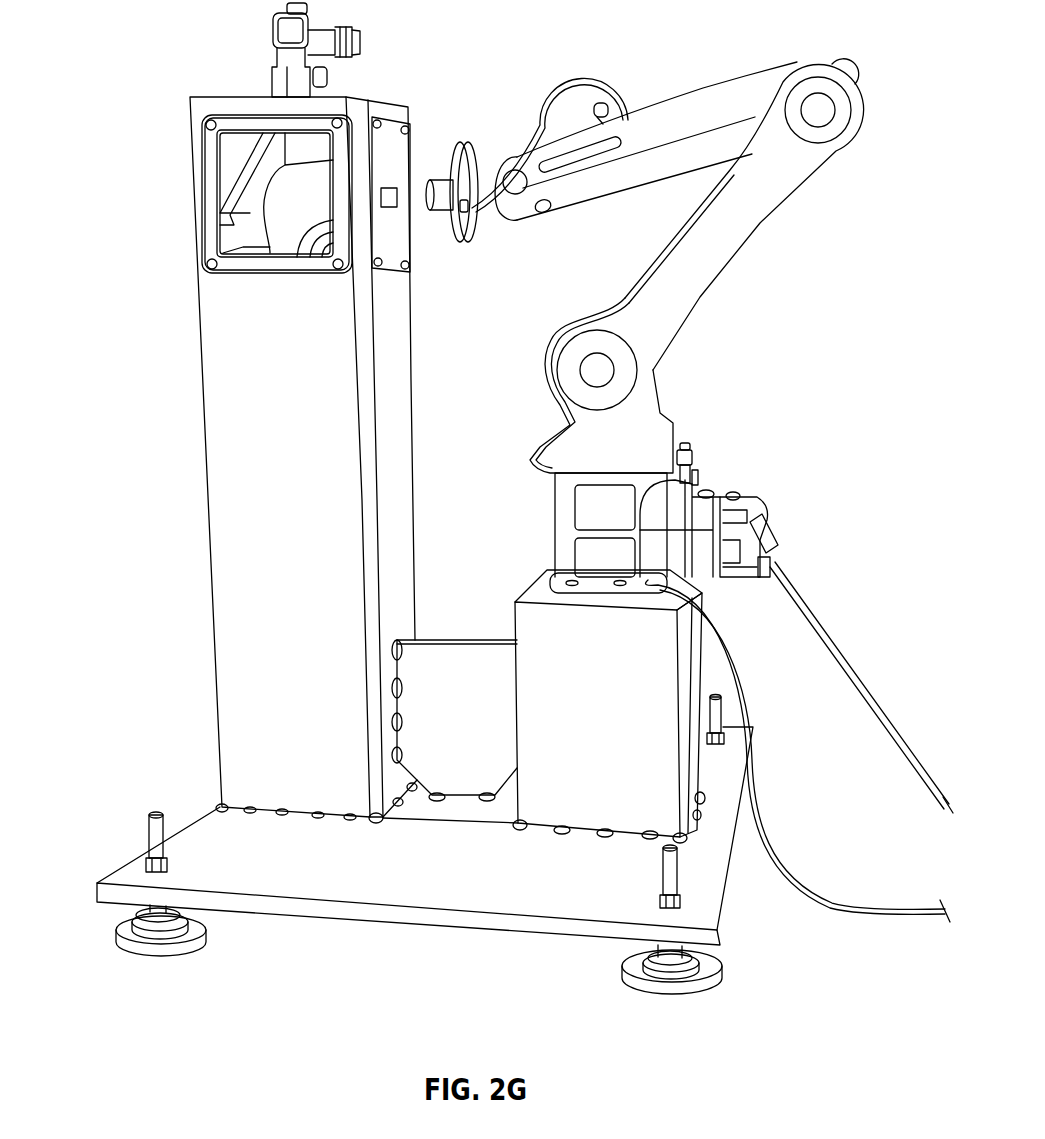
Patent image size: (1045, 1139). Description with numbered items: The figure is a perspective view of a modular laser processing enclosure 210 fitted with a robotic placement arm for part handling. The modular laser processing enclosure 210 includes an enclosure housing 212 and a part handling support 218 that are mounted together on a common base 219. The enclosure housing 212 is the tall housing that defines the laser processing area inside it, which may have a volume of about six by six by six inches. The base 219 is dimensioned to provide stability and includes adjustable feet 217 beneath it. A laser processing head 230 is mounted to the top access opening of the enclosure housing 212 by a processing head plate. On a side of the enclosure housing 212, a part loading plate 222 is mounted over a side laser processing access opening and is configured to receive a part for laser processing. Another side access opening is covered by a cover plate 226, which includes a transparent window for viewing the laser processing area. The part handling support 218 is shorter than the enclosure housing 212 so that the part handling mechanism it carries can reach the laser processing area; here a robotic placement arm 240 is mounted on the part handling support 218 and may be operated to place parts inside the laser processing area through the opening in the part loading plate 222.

The modular laser processing enclosure 210 is at (491, 498).
The enclosure housing 212 is at (228, 525).
The adjustable feet 217 is at (116, 937).
The part handling support 218 is at (652, 768).
The base 219 is at (127, 875).
The part loading plate 222 is at (405, 272).
The cover plate 226 is at (237, 274).
The laser processing head 230 is at (282, 32).
The robotic placement arm 240 is at (550, 153).